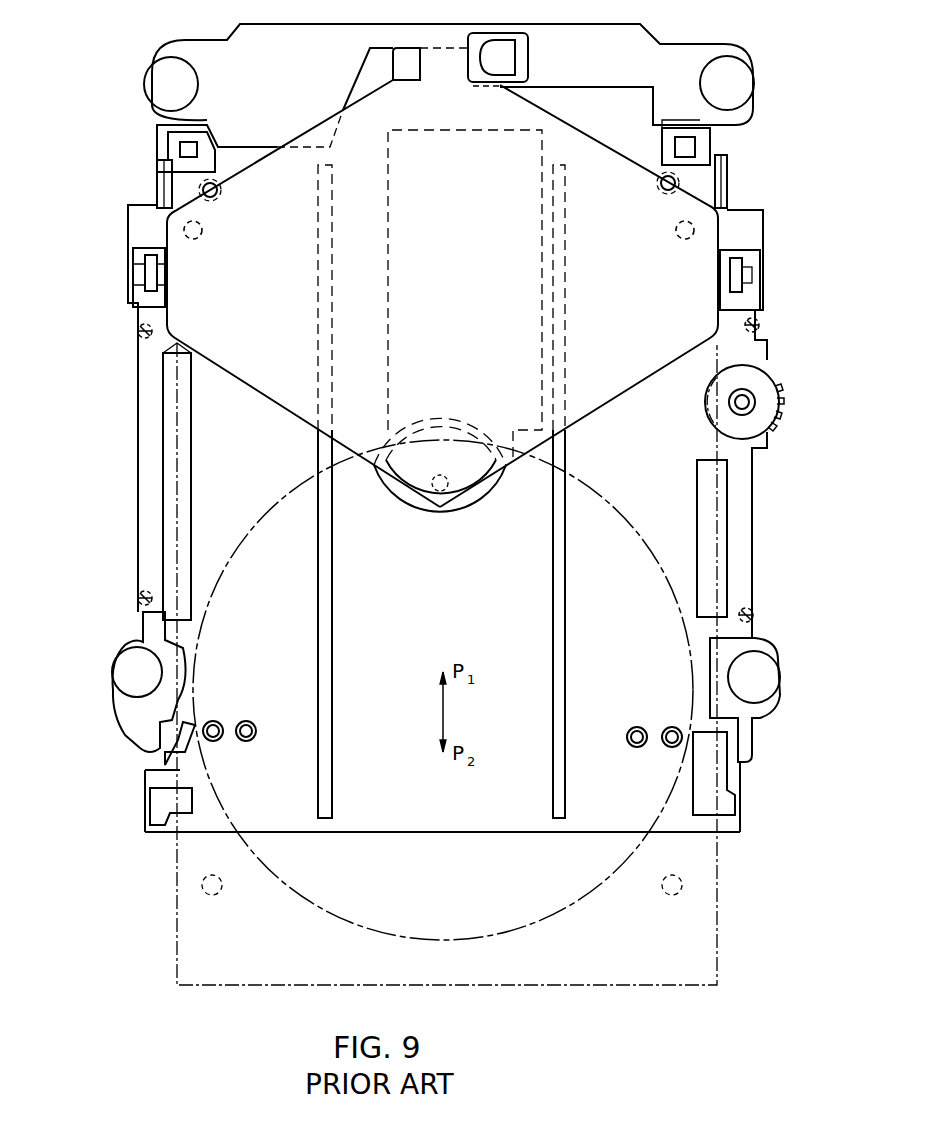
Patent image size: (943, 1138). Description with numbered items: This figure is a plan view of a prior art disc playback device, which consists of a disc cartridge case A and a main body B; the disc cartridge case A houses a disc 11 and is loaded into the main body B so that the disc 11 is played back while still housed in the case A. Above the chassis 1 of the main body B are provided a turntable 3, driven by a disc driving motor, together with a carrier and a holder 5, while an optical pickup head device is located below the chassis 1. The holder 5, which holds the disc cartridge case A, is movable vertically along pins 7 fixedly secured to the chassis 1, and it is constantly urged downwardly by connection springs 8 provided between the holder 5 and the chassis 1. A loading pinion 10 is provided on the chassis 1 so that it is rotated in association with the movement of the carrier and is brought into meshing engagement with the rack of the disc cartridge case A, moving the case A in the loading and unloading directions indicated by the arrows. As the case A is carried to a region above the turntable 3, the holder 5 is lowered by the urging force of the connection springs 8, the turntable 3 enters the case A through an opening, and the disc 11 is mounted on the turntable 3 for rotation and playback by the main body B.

The chassis 1 is at (590, 26).
The turntable 3 is at (434, 556).
The holder 5 is at (752, 541).
The pins 7 is at (199, 240).
The connection springs 8 is at (137, 331).
The loading pinion 10 is at (779, 413).
The disc 11 is at (530, 916).
The disc cartridge case A is at (176, 930).
The main body B is at (126, 208).